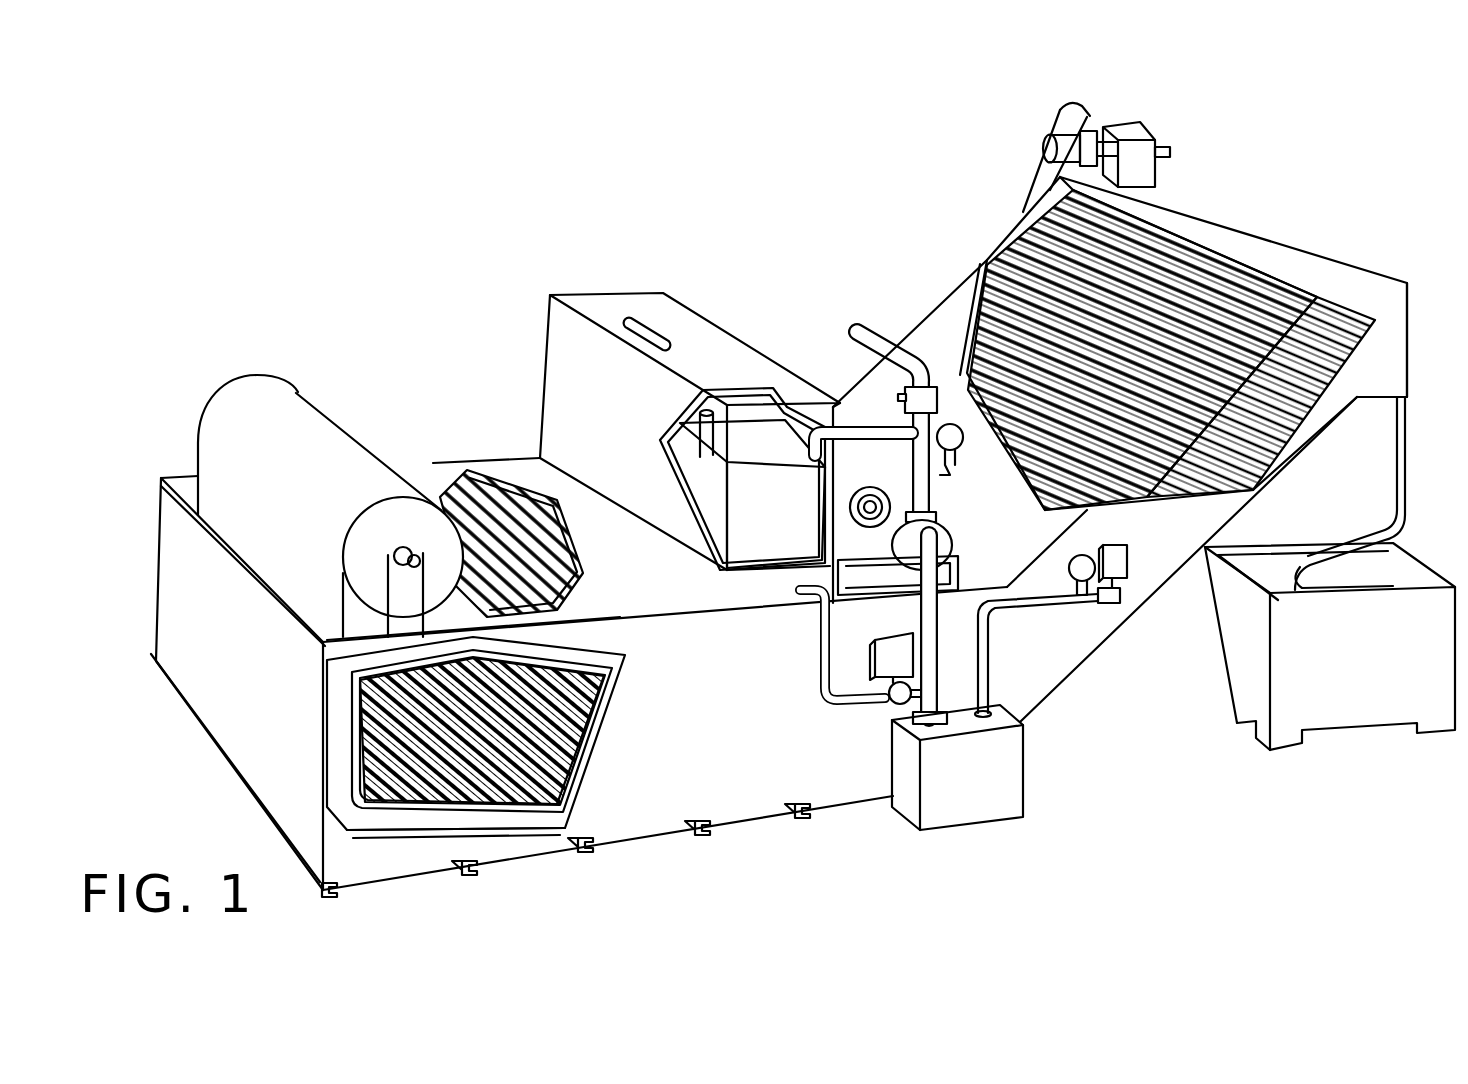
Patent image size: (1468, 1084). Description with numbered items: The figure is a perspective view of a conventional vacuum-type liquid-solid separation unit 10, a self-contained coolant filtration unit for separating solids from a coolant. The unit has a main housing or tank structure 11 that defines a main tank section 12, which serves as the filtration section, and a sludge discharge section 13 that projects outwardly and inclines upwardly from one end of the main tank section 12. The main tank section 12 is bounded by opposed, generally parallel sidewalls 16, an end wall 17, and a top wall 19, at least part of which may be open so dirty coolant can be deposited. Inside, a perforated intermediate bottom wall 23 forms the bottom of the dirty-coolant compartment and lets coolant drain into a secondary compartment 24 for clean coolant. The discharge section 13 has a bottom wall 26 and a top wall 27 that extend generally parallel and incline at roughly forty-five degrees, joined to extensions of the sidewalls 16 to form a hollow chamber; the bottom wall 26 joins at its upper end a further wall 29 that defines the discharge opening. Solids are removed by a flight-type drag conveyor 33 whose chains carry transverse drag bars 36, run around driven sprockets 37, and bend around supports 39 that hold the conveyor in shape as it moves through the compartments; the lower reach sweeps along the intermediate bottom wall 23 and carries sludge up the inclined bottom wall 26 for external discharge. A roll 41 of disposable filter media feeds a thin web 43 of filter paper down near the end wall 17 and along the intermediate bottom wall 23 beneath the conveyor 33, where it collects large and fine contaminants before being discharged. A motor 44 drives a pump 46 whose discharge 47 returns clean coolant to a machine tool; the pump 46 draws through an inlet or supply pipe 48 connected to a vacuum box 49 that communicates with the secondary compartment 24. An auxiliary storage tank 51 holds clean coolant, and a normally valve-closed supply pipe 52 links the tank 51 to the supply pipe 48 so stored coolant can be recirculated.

The liquid-solid separation unit 10 is at (368, 352).
The main housing or tank structure 11 is at (152, 540).
The main tank section 12 is at (508, 445).
The sludge discharge section 13 is at (975, 246).
The sidewalls 16 is at (730, 790).
The end wall 17 is at (232, 730).
The top wall 19 is at (430, 477).
The intermediate bottom wall or partition 23 is at (537, 805).
The secondary compartment 24 is at (460, 810).
The bottom wall 26 is at (1090, 655).
The top wall 27 is at (945, 300).
The further wall 29 is at (1378, 400).
The flight-type drag conveyor 33 is at (345, 750).
The flights or drag bars 36 is at (1210, 218).
The sprockets 37 is at (1355, 410).
The supports 39 is at (335, 800).
The roll of filter media 41 is at (270, 397).
The filter media web 43 is at (1378, 485).
The motor 44 is at (860, 470).
The pump 46 is at (940, 525).
The discharge 47 is at (872, 340).
The inlet or supply pipe 48 is at (932, 620).
The vacuum box 49 is at (1010, 785).
The auxiliary storage tank 51 is at (675, 470).
The supply pipe 52 is at (815, 670).